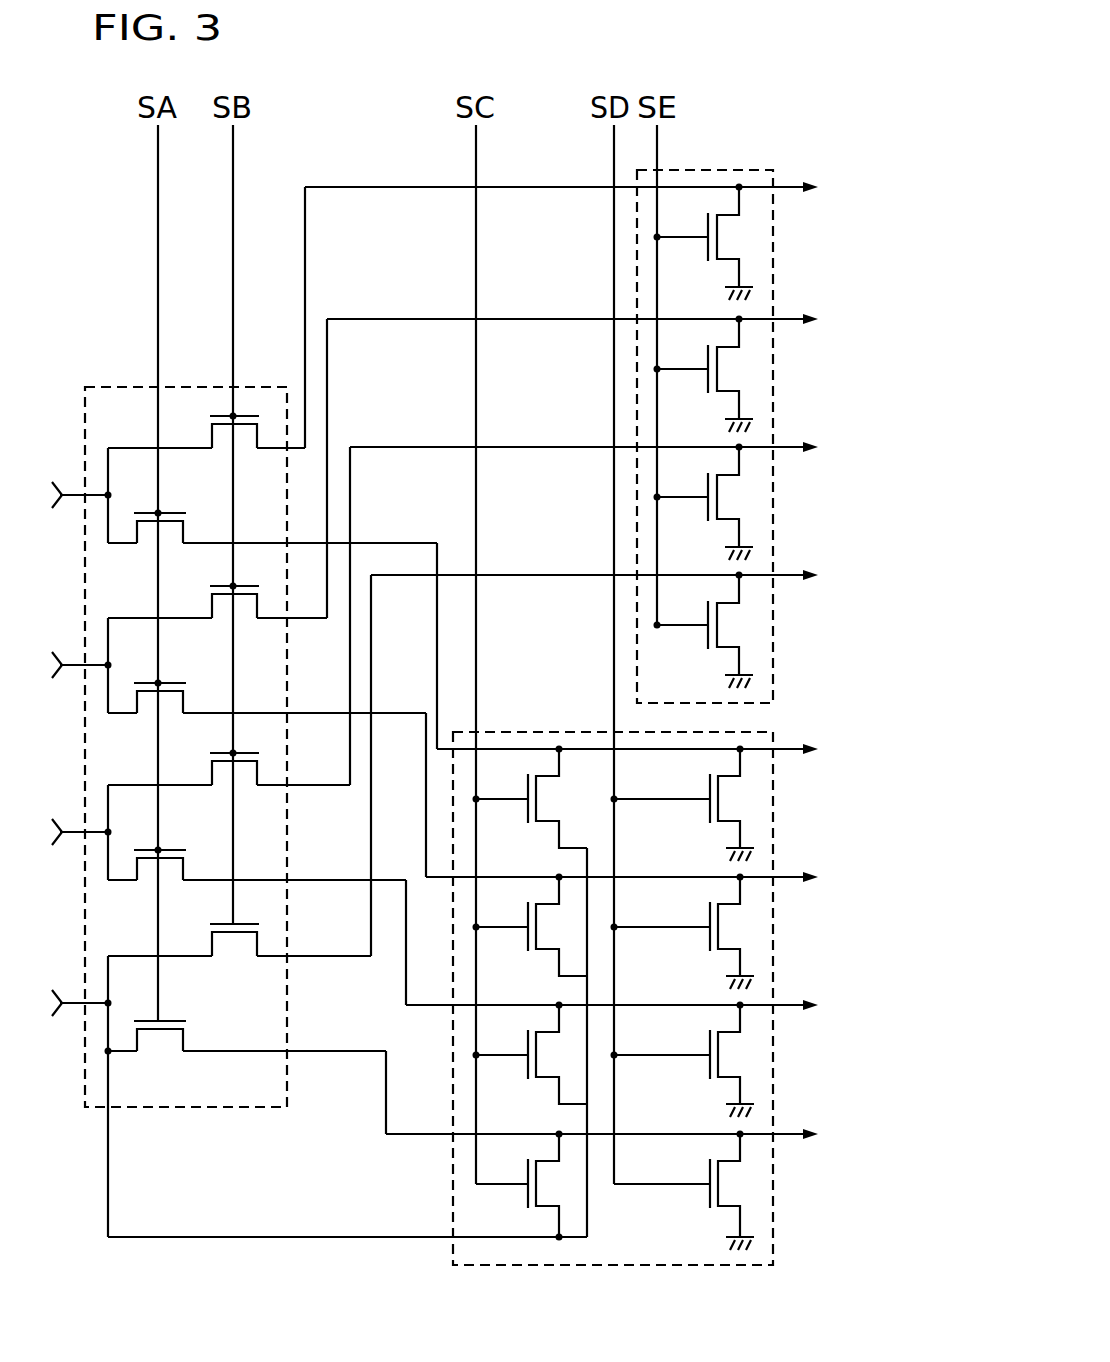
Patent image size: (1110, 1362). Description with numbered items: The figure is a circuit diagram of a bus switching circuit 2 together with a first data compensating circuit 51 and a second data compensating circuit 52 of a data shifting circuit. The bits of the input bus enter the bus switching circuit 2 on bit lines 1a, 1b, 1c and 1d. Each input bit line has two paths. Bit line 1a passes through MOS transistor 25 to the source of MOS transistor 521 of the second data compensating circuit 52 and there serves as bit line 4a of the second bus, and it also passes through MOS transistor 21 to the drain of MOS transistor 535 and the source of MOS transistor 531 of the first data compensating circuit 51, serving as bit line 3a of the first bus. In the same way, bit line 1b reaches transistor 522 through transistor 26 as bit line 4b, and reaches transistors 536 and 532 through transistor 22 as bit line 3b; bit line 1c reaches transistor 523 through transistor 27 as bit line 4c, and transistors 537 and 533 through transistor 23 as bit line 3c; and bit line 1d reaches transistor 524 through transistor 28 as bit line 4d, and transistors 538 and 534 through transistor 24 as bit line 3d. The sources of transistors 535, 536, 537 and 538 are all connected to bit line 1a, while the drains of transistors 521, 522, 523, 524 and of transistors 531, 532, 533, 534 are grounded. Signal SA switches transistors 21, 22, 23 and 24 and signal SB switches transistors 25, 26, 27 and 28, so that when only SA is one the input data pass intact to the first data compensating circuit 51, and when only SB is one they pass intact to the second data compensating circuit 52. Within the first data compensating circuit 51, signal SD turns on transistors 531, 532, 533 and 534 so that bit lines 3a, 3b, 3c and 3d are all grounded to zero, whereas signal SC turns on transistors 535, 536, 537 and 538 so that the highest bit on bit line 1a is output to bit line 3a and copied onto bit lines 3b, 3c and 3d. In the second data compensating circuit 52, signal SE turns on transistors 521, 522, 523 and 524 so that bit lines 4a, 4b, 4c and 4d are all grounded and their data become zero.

The bit line 1a is at (74, 998).
The bit line 1b is at (74, 827).
The bit line 1c is at (74, 660).
The bit line 1d is at (74, 490).
The bus switching circuit 2 is at (130, 383).
The MOS transistor 21 is at (176, 1016).
The MOS transistor 22 is at (176, 845).
The MOS transistor 23 is at (176, 678).
The MOS transistor 24 is at (176, 508).
The MOS transistor 25 is at (245, 957).
The MOS transistor 26 is at (245, 786).
The MOS transistor 27 is at (245, 619).
The MOS transistor 28 is at (245, 449).
The bit line 3a is at (795, 1133).
The bit line 3b is at (795, 1004).
The bit line 3c is at (795, 876).
The bit line 3d is at (795, 748).
The bit line 4a is at (795, 574).
The bit line 4b is at (795, 446).
The bit line 4c is at (795, 318).
The bit line 4d is at (795, 186).
The first data compensating circuit 51 is at (774, 1197).
The second data compensating circuit 52 is at (744, 166).
The MOS transistor 521 is at (707, 637).
The MOS transistor 522 is at (707, 509).
The MOS transistor 523 is at (707, 381).
The MOS transistor 524 is at (707, 249).
The MOS transistor 531 is at (707, 1192).
The MOS transistor 532 is at (707, 1063).
The MOS transistor 533 is at (707, 935).
The MOS transistor 534 is at (707, 807).
The MOS transistor 535 is at (524, 1192).
The MOS transistor 536 is at (524, 1063).
The MOS transistor 537 is at (524, 935).
The MOS transistor 538 is at (524, 807).